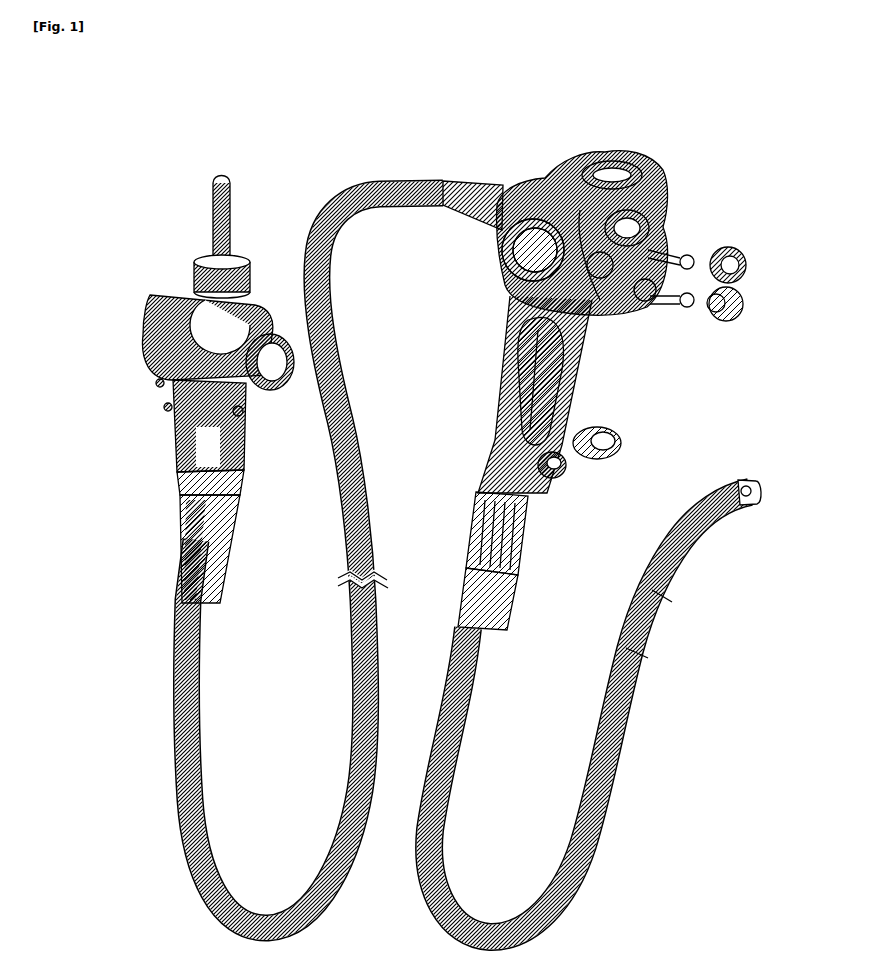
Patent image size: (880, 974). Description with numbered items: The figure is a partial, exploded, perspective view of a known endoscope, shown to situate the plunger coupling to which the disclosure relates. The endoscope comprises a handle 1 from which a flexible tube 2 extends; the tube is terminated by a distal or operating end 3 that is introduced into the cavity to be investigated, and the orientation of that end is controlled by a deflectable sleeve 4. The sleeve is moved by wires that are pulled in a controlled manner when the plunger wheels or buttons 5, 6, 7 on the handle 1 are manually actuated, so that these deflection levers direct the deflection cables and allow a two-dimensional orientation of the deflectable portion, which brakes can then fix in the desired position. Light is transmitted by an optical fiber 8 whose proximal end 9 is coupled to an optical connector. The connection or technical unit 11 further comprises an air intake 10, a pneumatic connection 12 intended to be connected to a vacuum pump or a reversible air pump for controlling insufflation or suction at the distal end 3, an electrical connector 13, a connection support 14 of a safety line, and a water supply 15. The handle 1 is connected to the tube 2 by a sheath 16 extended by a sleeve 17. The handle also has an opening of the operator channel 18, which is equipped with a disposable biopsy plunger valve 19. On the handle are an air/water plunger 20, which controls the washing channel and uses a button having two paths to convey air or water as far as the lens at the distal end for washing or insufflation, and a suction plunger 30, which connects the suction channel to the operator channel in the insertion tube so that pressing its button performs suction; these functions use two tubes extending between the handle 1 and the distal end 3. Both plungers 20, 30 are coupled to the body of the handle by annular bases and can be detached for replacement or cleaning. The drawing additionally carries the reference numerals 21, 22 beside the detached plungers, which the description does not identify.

The handle 1 is at (513, 370).
The flexible tube 2 is at (607, 762).
The distal end 3 is at (750, 506).
The deflectable sleeve 4 is at (690, 540).
The plunger wheel 5 is at (497, 228).
The plunger wheel 6 is at (497, 273).
The plunger wheel 7 is at (652, 208).
The optical fiber 8 is at (213, 207).
The proximal end 9 is at (227, 173).
The air intake 10 is at (230, 247).
The connection unit 11 is at (183, 350).
The pneumatic connection 12 is at (240, 416).
The electrical connector 13 is at (280, 390).
The connection support 14 is at (157, 384).
The water supply 15 is at (166, 410).
The sheath 16 is at (480, 587).
The sleeve 17 is at (507, 570).
The operator channel opening 18 is at (560, 472).
The disposable biopsy plunger valve 19 is at (600, 458).
The air/water plunger 20 is at (722, 246).
The air/water button 21 is at (710, 318).
The button body 22 is at (733, 320).
The suction plunger 30 is at (683, 306).